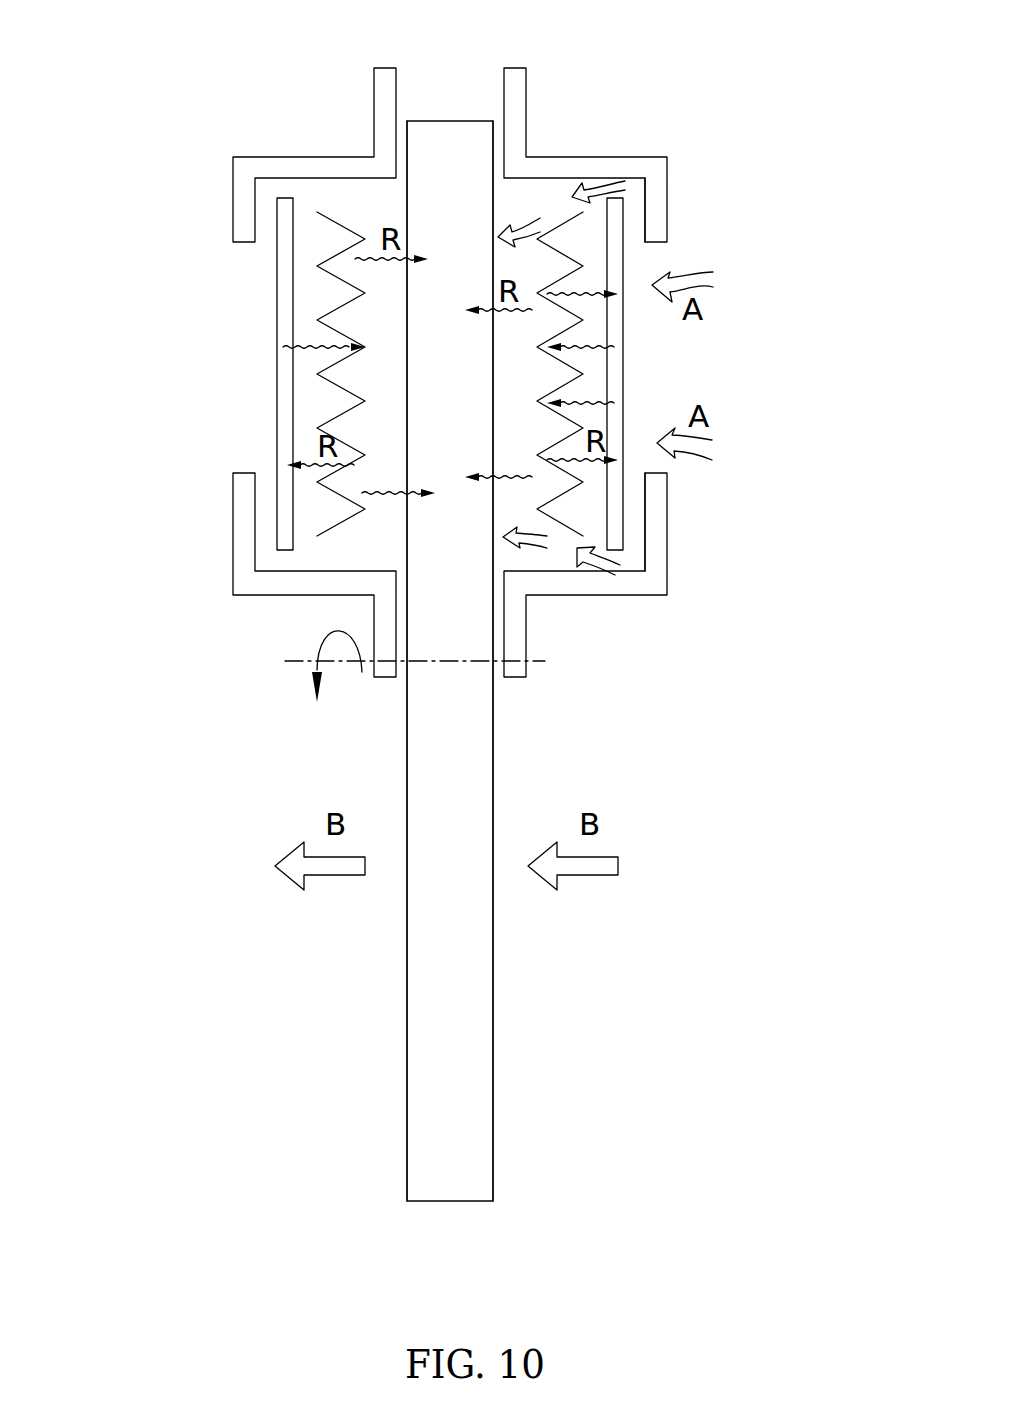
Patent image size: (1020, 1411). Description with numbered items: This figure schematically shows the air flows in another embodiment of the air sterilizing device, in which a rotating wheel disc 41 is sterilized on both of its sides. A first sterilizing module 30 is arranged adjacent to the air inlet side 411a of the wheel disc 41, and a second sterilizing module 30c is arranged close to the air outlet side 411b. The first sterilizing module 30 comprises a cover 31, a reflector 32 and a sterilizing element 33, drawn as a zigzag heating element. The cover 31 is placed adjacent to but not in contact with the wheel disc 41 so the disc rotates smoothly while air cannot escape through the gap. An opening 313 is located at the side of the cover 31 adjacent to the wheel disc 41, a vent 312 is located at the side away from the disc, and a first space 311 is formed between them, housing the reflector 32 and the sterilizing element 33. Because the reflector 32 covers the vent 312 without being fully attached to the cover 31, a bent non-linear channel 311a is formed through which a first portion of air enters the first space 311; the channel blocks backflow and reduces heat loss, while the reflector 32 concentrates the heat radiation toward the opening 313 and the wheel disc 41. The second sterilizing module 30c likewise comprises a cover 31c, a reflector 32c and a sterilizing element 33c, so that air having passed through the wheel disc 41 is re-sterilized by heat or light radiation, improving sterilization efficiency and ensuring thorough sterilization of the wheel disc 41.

The sterilizing module 30 is at (704, 379).
The cover 31 is at (692, 379).
The first space 311 is at (550, 180).
The non-linear channel 311a is at (630, 193).
The vent 312 is at (655, 370).
The opening 313 is at (513, 207).
The reflector 32 is at (615, 278).
The sterilizing element 33 is at (590, 290).
The second sterilizing module 30c is at (221, 372).
The cover 31c is at (233, 183).
The reflector 32c is at (277, 258).
The sterilizing element 33c is at (317, 270).
The wheel disc 41 is at (457, 1155).
The air inlet side 411a is at (493, 1133).
The air outlet side 411b is at (407, 1133).